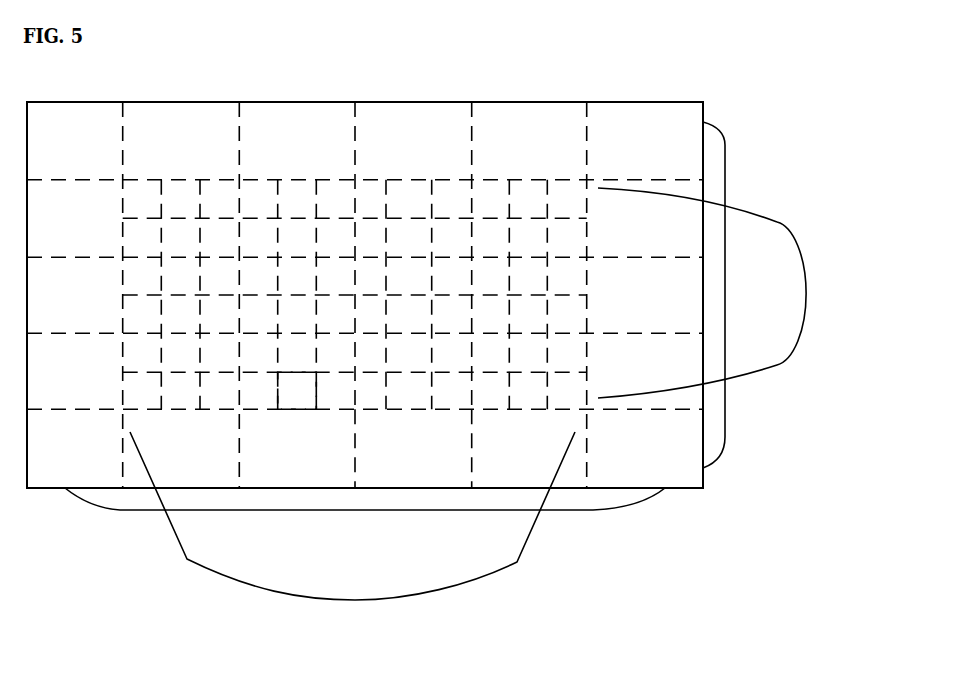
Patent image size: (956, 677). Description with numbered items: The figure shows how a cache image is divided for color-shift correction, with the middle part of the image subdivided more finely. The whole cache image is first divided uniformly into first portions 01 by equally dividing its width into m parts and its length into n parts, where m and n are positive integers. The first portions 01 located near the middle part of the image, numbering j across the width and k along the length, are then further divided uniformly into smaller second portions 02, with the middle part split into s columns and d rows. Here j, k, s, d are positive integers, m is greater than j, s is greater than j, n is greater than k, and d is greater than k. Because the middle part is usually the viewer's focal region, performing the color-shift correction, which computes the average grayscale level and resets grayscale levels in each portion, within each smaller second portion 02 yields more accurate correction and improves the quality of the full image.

The first portion 01 is at (438, 462).
The second portion 02 is at (300, 400).
The number of width divisions m is at (365, 510).
The number of middle first portions across width j is at (242, 544).
The number of width subdivisions of middle part s is at (354, 600).
The number of length divisions n is at (725, 295).
The number of length subdivisions of middle part d is at (723, 233).
The number of middle first portions along length k is at (810, 293).